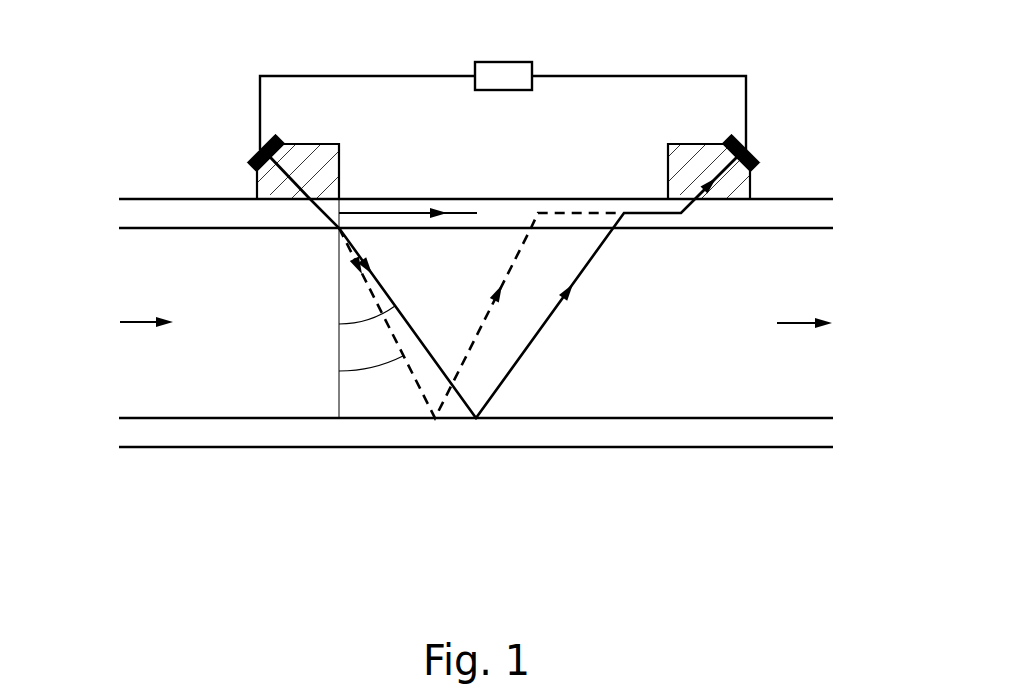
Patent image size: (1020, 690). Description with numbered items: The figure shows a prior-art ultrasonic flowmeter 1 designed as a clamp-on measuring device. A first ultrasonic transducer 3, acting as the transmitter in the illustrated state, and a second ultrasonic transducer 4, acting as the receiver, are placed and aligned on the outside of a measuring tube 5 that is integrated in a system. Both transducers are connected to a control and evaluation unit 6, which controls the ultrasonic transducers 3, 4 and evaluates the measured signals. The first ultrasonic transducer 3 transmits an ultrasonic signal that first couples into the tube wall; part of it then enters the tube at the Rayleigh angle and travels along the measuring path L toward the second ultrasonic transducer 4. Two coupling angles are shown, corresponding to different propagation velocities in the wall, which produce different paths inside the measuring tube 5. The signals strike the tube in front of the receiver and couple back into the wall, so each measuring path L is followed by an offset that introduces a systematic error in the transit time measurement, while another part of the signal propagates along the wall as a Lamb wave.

The ultrasonic flowmeter 1 is at (120, 63).
The first ultrasonic transducer 3 is at (253, 187).
The second ultrasonic transducer 4 is at (750, 185).
The measuring tube 5 is at (328, 434).
The control and evaluation unit 6 is at (475, 68).
The measuring path L is at (513, 262).